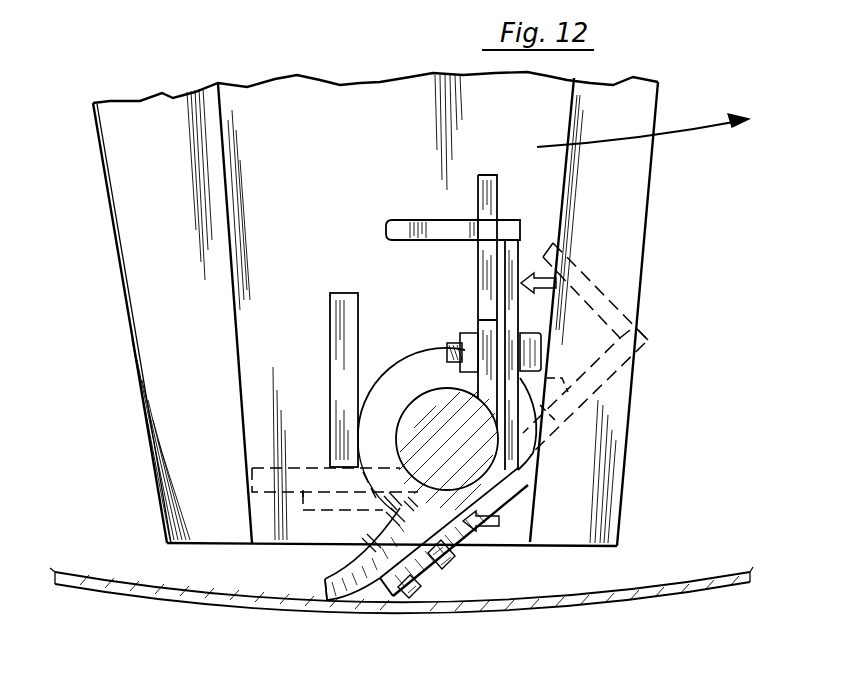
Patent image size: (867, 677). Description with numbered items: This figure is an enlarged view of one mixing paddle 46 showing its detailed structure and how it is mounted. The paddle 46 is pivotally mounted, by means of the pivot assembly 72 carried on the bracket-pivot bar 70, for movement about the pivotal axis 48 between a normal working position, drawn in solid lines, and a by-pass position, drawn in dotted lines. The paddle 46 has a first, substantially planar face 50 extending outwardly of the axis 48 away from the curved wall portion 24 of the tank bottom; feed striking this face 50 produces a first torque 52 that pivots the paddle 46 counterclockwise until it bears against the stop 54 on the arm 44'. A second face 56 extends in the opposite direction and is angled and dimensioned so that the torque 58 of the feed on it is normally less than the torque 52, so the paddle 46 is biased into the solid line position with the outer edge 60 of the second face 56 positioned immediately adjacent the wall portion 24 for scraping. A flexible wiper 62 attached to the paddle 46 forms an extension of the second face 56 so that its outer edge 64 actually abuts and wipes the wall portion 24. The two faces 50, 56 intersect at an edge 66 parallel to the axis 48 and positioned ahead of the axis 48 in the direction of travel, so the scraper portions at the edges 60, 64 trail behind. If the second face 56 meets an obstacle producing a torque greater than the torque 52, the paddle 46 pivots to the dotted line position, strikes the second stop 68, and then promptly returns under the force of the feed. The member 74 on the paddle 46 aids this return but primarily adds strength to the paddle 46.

The first curved wall portion 24 is at (215, 604).
The arm 44' is at (375, 309).
The mixing paddle 46 is at (580, 248).
The pivotal axis 48 is at (446, 438).
The first face 50 is at (521, 240).
The first torque 52 is at (541, 290).
The stop 54 is at (478, 193).
The second face 56 is at (458, 544).
The second torque 58 is at (487, 527).
The outer edge of the second face 60 is at (398, 597).
The flexible wiper 62 is at (338, 568).
The outer edge of the wiper 64 is at (330, 604).
The edge 66 is at (527, 482).
The second stop 68 is at (330, 342).
The bracket-pivot bar 70 is at (400, 410).
The pivot assembly 72 is at (403, 368).
The member 74 is at (428, 219).